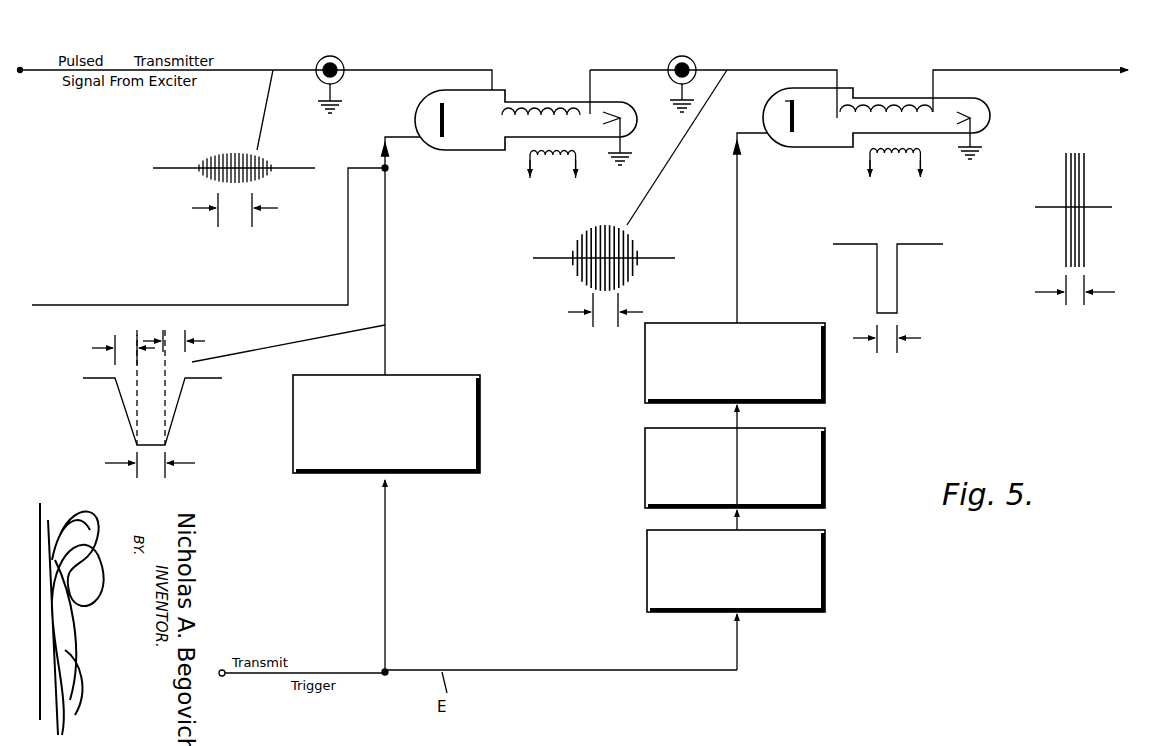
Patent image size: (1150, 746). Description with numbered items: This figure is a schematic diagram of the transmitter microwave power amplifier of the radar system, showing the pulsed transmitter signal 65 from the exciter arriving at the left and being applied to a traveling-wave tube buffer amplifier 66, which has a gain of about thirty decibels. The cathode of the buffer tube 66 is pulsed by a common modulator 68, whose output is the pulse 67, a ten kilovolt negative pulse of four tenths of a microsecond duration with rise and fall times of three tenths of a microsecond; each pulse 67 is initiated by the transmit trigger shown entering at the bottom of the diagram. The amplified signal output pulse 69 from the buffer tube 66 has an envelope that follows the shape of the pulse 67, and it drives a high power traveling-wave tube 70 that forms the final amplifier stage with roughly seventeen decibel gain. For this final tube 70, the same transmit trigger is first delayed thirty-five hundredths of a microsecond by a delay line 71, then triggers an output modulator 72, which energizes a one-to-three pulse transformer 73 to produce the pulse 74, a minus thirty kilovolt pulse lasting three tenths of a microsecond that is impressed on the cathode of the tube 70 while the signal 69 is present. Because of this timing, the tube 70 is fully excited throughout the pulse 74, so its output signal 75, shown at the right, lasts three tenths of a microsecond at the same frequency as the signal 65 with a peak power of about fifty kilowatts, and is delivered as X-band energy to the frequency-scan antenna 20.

The frequency-scan antenna 20 is at (1030, 81).
The transmitter output signal 65 is at (262, 173).
The traveling-wave tube buffer amplifier 66 is at (499, 154).
The pulse 67 is at (175, 412).
The modulator 68 is at (468, 428).
The signal output pulse 69 is at (630, 248).
The high power traveling-wave tube 70 is at (849, 153).
The delay line 71 is at (815, 577).
The output modulator 72 is at (814, 470).
The 1:3 pulse transformer 73 is at (818, 362).
The pulse 74 is at (897, 282).
The output signal 75 is at (1085, 183).